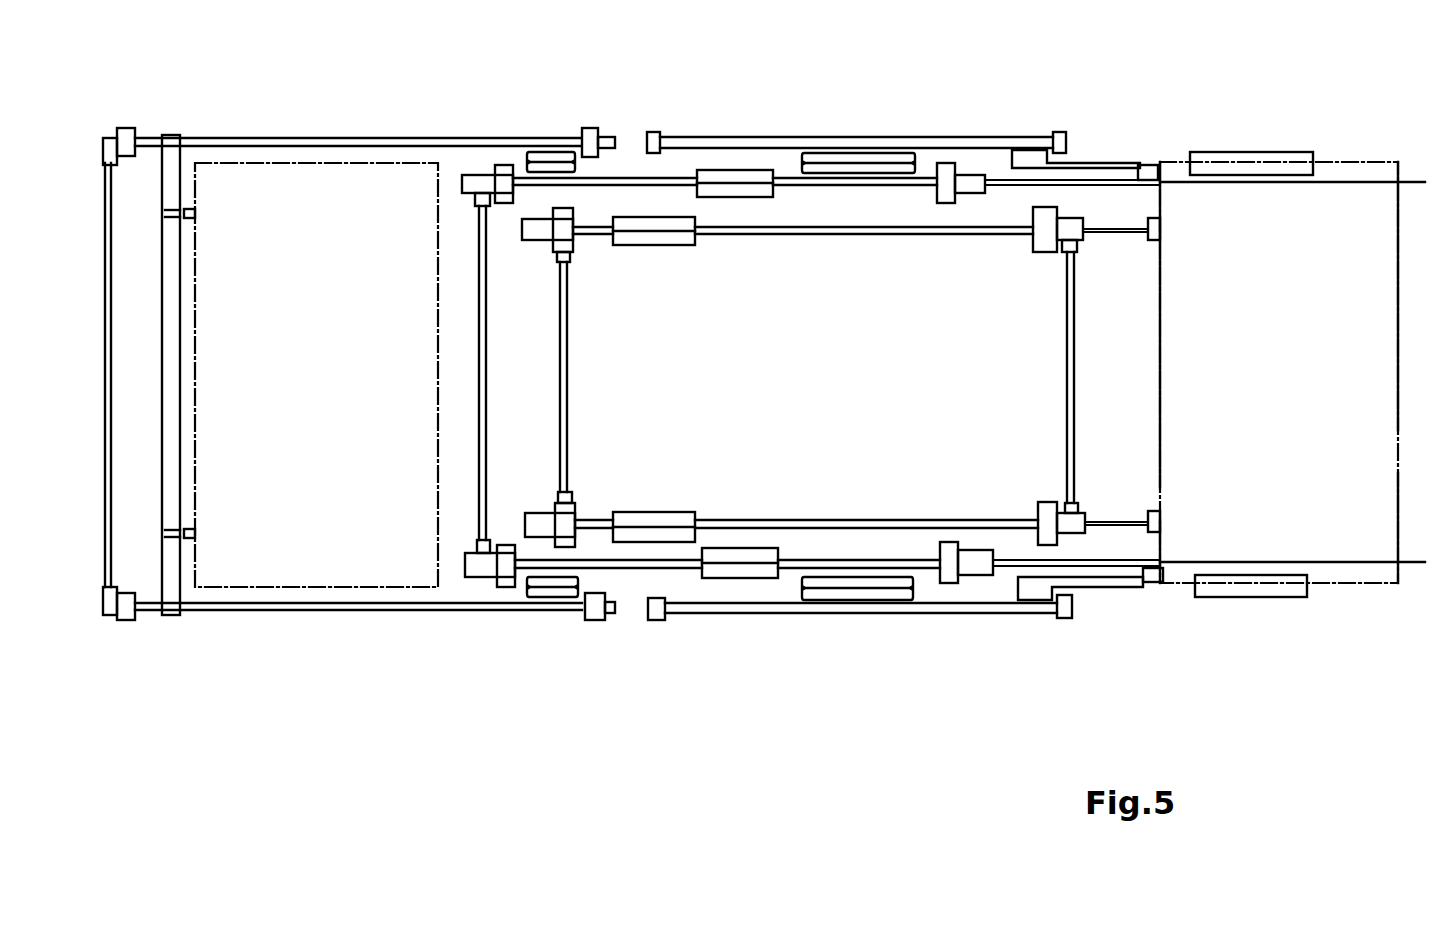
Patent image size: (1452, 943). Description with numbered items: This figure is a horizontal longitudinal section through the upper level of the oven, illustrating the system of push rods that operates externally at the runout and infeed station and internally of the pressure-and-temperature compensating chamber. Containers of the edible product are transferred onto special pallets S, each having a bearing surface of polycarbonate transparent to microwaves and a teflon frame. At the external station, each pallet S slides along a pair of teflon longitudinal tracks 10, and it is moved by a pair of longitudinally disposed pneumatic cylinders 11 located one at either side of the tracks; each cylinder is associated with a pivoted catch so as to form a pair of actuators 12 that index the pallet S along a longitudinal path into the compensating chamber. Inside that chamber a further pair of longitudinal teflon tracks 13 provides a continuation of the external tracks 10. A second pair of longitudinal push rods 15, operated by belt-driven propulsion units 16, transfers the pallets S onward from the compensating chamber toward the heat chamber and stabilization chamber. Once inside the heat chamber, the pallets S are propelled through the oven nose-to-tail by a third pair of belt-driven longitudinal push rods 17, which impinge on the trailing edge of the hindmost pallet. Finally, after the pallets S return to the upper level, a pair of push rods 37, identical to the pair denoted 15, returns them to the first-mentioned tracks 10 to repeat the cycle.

The longitudinal tracks 10 is at (553, 155).
The pneumatic cylinders 11 is at (884, 142).
The actuators 12 is at (1130, 165).
The longitudinal teflon tracks 13 is at (1255, 158).
The push rods 15 is at (1133, 240).
The belt-driven propulsion units 16 is at (175, 138).
The push rods 17 is at (1327, 185).
The push rods 37 is at (195, 222).
The pallet S is at (398, 163).